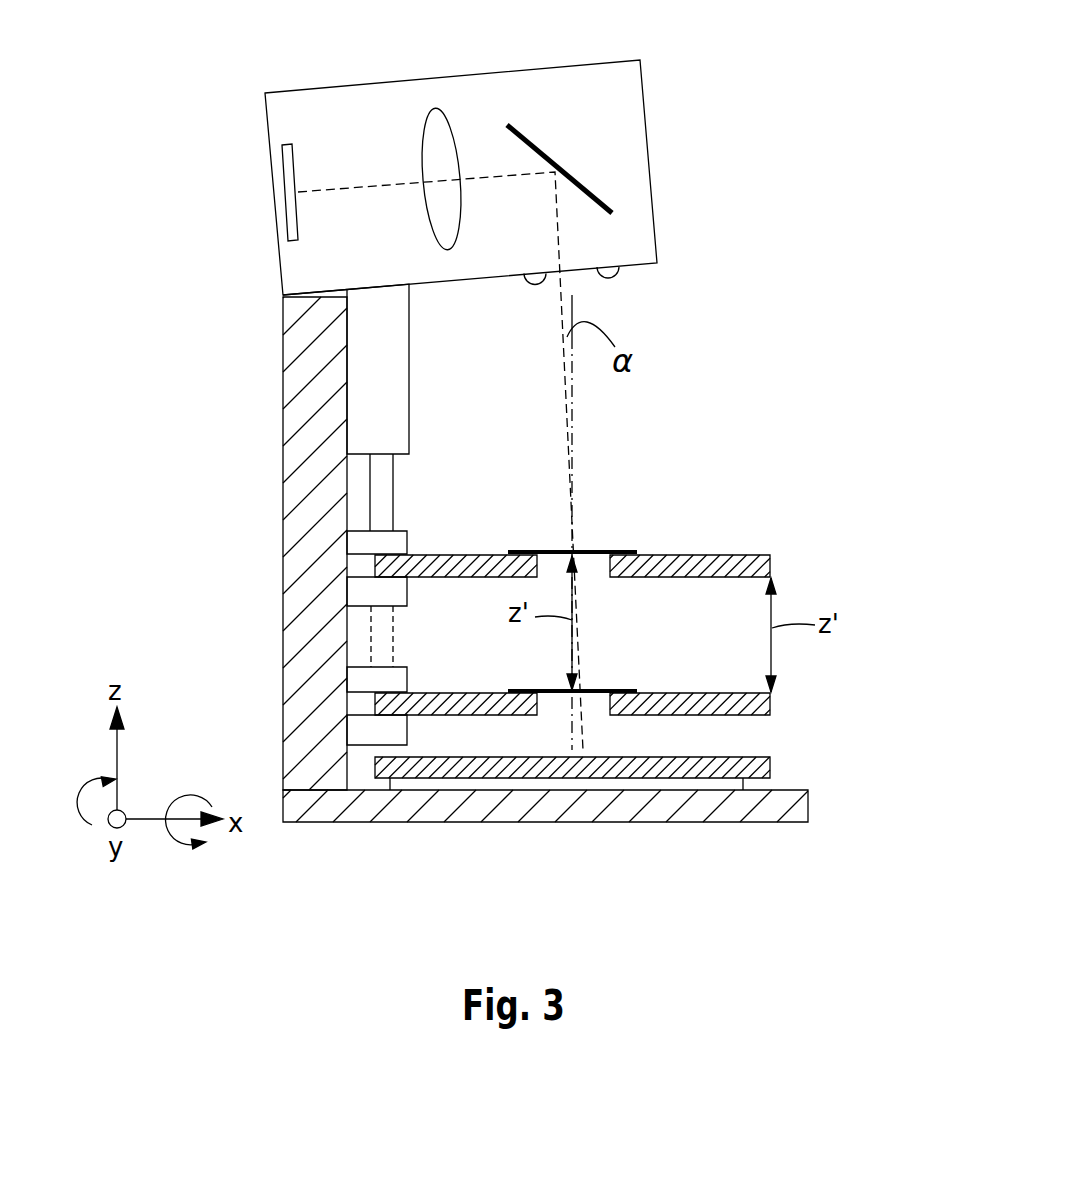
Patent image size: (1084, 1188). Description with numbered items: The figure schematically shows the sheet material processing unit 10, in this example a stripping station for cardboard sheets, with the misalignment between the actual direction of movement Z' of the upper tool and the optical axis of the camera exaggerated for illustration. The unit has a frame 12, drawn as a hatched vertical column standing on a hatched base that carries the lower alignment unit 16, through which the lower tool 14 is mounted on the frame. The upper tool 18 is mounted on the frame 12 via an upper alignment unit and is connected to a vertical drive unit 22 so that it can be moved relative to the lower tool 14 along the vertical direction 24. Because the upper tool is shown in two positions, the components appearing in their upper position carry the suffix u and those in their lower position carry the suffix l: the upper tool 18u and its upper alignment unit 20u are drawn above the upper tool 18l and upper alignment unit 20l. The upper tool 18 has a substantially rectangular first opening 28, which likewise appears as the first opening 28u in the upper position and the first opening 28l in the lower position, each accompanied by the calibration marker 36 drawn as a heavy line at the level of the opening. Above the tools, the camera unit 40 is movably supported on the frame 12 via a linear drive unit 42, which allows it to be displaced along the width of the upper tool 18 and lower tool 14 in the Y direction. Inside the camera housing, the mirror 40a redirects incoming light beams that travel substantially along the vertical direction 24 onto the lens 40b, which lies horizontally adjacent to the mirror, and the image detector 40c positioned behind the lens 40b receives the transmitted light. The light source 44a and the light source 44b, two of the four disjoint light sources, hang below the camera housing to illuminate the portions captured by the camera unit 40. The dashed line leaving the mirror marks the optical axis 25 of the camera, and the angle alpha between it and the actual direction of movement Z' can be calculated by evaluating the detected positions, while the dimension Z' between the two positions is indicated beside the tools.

The sheet material processing unit 10 is at (770, 132).
The frame 12 is at (318, 427).
The lower tool 14 is at (757, 768).
The lower alignment unit 16 is at (707, 785).
The upper tool 18 is at (652, 629).
The upper tool in upper position 18u is at (757, 572).
The upper tool in lower position 18l is at (757, 712).
The upper alignment unit in upper position 20u is at (365, 587).
The upper alignment unit in lower position 20l is at (365, 730).
The vertical drive unit 22 is at (373, 358).
The vertical direction 24 is at (573, 426).
The optical axis 25 is at (567, 412).
The first opening 28 is at (629, 696).
The first opening in upper position 28u is at (586, 552).
The first opening in lower position 28l is at (595, 705).
The calibration marker 36 is at (532, 550).
The camera unit 40 is at (418, 152).
The mirror 40a is at (532, 143).
The lens 40b is at (449, 108).
The image detector 40c is at (287, 173).
The linear drive unit 42 is at (307, 283).
The light source 44a is at (619, 274).
The light source 44b is at (528, 280).